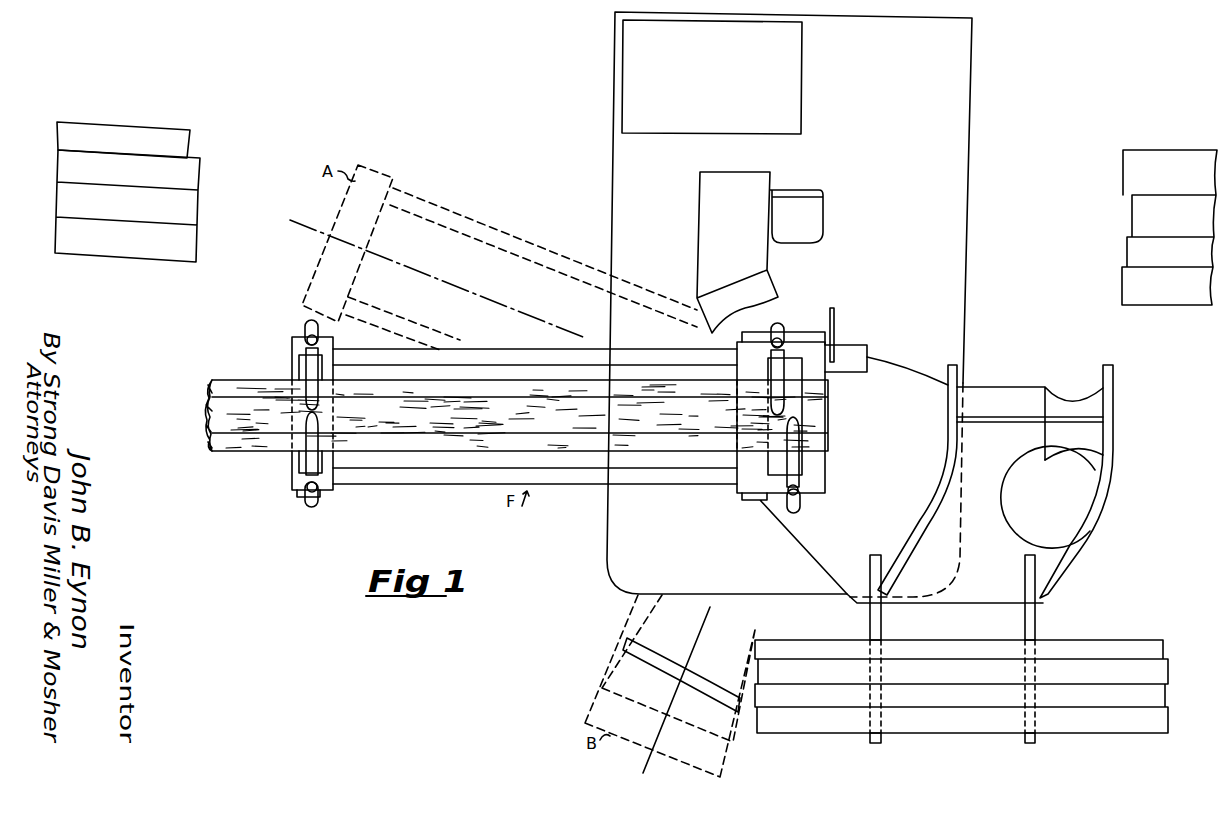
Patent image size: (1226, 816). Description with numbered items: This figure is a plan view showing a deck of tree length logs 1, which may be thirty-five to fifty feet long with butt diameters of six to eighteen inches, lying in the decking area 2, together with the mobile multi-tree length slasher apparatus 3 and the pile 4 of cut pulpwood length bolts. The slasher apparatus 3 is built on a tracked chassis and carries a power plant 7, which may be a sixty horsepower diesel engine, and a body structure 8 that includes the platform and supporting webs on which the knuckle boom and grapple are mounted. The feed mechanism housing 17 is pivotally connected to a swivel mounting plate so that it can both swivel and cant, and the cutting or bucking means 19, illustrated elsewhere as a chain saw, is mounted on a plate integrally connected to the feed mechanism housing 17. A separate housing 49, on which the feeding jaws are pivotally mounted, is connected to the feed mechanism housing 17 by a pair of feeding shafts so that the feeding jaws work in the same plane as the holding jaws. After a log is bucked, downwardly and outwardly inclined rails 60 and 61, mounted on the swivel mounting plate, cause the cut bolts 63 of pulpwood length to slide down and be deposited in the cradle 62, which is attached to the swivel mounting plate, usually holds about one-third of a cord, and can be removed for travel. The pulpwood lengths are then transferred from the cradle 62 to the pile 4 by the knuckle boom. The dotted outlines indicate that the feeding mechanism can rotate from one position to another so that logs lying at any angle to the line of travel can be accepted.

The tree length logs 1 is at (100, 249).
The decking area 2 is at (105, 116).
The mobile multi-tree length slasher apparatus 3 is at (978, 28).
The pile of cut pulpwood length bolts 4 is at (1128, 178).
The power plant 7 is at (686, 44).
The body structure 8 is at (700, 230).
The feed mechanism housing 17 is at (821, 482).
The cutting or bucking means 19 is at (836, 341).
The housing 49 is at (297, 487).
The rail 60 is at (916, 525).
The rail 61 is at (1090, 517).
The cradle 62 is at (1032, 611).
The cut bolts 63 is at (1060, 732).